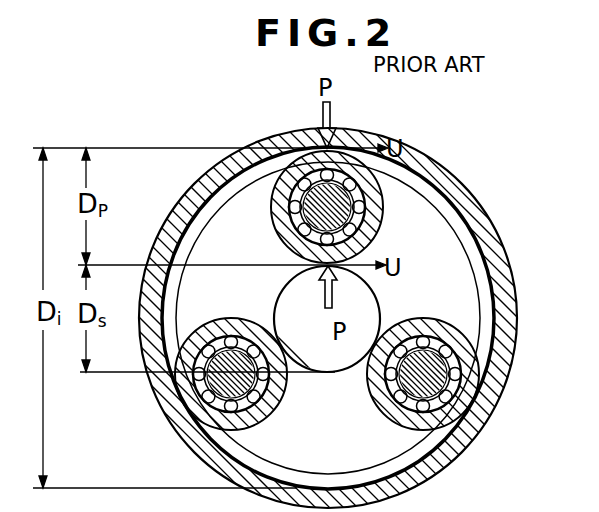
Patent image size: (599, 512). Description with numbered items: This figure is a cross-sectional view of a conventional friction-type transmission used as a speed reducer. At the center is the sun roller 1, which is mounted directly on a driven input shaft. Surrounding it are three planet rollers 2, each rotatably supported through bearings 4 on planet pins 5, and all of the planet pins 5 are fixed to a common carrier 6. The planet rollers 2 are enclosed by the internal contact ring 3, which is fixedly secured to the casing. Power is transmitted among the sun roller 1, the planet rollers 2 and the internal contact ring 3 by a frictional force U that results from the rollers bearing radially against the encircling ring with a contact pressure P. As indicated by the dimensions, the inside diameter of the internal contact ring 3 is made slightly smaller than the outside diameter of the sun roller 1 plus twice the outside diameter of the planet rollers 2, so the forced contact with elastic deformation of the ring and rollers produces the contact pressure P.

The sun roller 1 is at (365, 300).
The planet rollers 2 is at (200, 203).
The internal contact ring 3 is at (485, 228).
The bearings 4 is at (274, 152).
The planet pins 5 is at (268, 183).
The carrier 6 is at (423, 230).